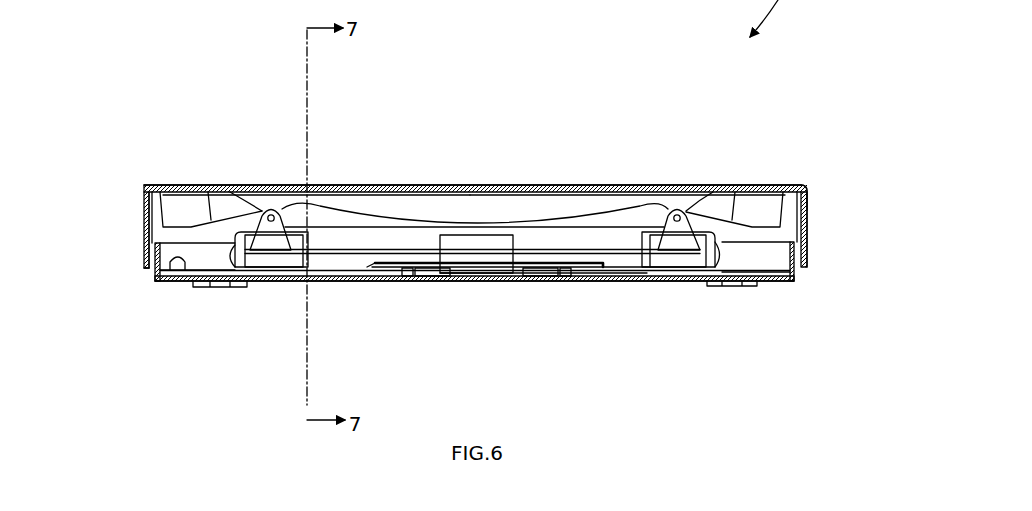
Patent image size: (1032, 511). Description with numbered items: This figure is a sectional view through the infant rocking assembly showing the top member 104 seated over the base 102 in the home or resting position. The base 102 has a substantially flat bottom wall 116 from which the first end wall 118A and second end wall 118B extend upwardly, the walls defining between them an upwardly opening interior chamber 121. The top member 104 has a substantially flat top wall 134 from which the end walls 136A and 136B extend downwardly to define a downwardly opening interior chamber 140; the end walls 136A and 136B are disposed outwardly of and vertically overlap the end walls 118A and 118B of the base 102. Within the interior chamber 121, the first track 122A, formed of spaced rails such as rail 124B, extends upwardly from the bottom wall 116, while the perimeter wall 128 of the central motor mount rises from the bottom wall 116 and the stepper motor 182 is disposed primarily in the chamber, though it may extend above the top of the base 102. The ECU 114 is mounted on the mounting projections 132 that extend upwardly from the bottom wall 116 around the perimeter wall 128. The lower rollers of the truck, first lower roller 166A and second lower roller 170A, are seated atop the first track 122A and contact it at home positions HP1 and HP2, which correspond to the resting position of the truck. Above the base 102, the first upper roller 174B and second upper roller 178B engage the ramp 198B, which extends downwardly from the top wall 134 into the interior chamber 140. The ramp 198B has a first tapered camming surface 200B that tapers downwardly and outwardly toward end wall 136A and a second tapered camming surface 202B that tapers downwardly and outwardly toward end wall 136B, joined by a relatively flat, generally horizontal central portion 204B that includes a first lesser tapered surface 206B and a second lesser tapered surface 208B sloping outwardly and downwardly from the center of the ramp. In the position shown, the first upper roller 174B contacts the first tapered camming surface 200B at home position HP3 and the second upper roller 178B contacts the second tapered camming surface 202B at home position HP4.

The base 102 is at (154, 279).
The top member 104 is at (147, 183).
The ECU 114 is at (368, 265).
The bottom wall 116 is at (630, 283).
The first end wall 118A is at (157, 250).
The second end wall 118B is at (808, 253).
The interior chamber 121 is at (144, 265).
The first track 122A is at (725, 285).
The rail 124B is at (187, 262).
The perimeter wall 128 is at (486, 268).
The mounting projections 132 is at (407, 278).
The top wall 134 is at (328, 186).
The first end wall 136A is at (145, 200).
The second end wall 136B is at (809, 207).
The interior chamber 140 is at (155, 213).
The first lower roller 166A is at (214, 285).
The second lower roller 170A is at (742, 258).
The first upper roller 174B is at (214, 218).
The second upper roller 178B is at (703, 203).
The stepper motor 182 is at (492, 240).
The ramp 198B is at (807, 200).
The first tapered camming surface 200B is at (207, 205).
The second tapered camming surface 202B is at (765, 205).
The central portion 204B is at (465, 192).
The first lesser tapered surface 206B is at (373, 192).
The second lesser tapered surface 208B is at (569, 192).
The home position HP1 is at (249, 278).
The home position HP2 is at (704, 272).
The home position HP3 is at (273, 205).
The home position HP4 is at (679, 205).